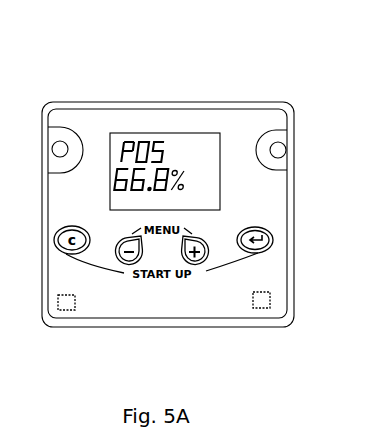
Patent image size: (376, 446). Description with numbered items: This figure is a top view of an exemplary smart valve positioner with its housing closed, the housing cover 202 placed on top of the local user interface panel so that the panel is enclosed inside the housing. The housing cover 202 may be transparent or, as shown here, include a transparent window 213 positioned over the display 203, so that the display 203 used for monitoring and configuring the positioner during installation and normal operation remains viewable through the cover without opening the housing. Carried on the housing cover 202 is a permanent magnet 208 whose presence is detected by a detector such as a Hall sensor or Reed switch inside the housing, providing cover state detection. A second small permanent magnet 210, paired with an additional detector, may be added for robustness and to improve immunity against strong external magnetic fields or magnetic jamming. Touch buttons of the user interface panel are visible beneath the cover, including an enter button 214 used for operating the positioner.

The housing cover 202 is at (113, 327).
The display 203 is at (192, 151).
The permanent magnet 208 is at (60, 303).
The small permanent magnet 210 is at (270, 299).
The transparent window 213 is at (143, 133).
The enter button 214 is at (262, 251).